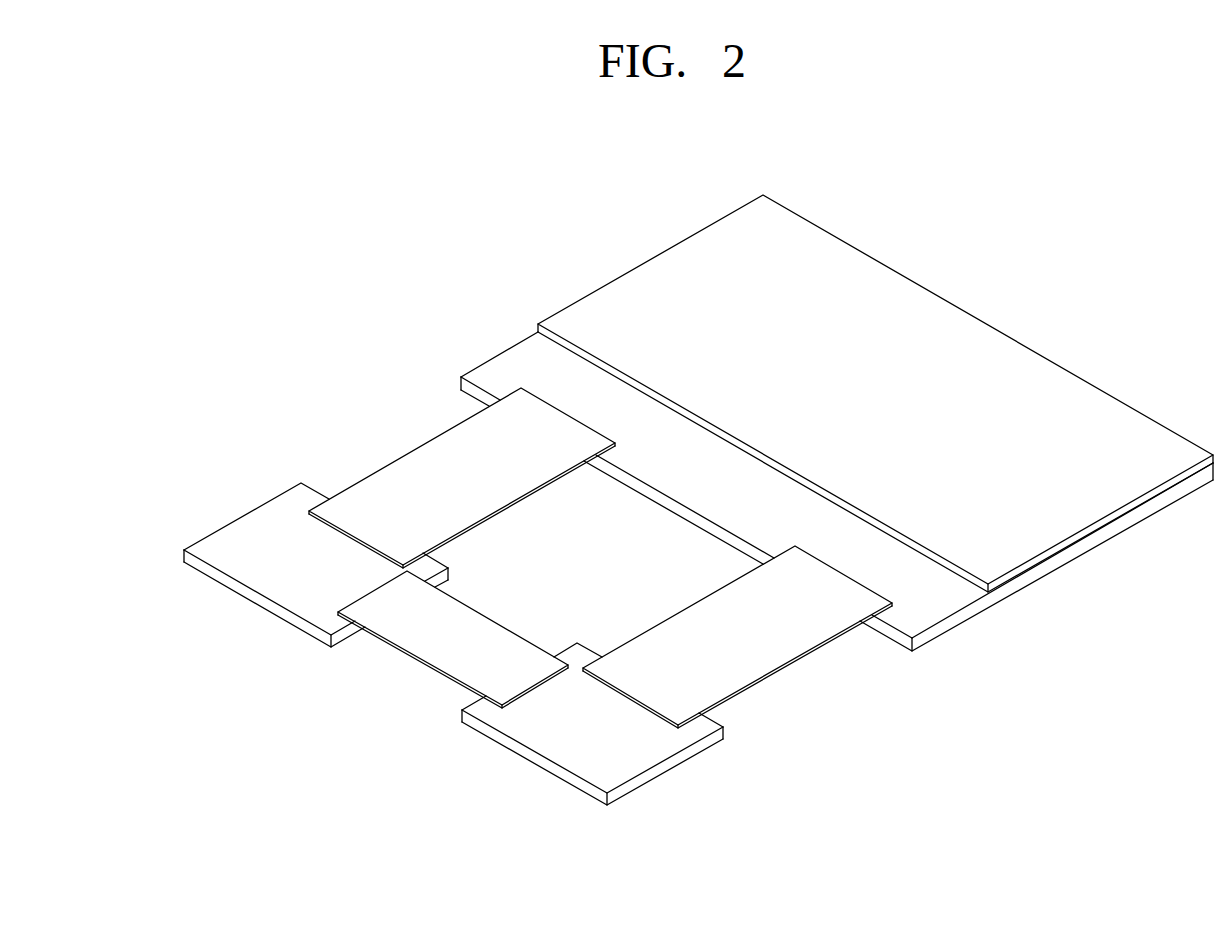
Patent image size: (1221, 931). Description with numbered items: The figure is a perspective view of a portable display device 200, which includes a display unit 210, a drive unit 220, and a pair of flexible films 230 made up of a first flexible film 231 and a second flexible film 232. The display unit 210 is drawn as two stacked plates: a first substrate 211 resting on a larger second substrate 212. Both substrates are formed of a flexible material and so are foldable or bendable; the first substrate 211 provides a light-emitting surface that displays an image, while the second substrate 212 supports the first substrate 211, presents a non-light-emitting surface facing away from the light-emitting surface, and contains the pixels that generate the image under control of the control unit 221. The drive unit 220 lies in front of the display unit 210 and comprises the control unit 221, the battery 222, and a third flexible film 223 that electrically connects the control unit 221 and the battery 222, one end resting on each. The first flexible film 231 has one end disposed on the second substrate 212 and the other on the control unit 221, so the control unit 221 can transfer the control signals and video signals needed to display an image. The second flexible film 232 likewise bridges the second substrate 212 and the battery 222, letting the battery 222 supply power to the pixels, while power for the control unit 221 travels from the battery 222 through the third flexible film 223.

The portable device 200 is at (997, 201).
The display unit 210 is at (566, 228).
The first substrate 211 is at (598, 303).
The second substrate 212 is at (502, 375).
The drive unit 220 is at (412, 777).
The control unit 221 is at (310, 633).
The battery 222 is at (470, 727).
The third flexible film 223 is at (434, 651).
The second pattern layer 230 is at (648, 588).
The first flexible film 231 is at (526, 488).
The second flexible film 232 is at (688, 625).